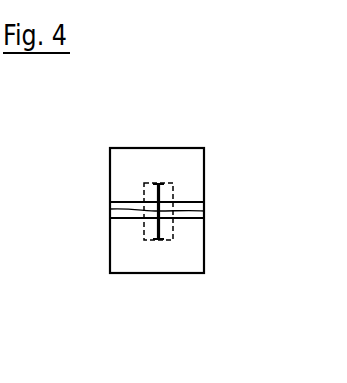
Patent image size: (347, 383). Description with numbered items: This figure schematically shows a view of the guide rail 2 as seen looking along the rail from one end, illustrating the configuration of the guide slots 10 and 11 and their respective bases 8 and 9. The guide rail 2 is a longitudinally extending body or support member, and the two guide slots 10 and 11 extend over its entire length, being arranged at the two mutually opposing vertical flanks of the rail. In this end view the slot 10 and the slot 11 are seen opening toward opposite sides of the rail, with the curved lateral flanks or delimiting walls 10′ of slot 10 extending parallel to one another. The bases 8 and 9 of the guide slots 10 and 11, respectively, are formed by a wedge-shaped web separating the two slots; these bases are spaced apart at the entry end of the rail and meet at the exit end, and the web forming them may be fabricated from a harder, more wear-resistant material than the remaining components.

The guide rail 2 is at (205, 164).
The base of guide slot 8 is at (146, 212).
The base of guide slot 9 is at (170, 213).
The guide slot 10 is at (204, 211).
The guide slot flank 10′ is at (204, 203).
The guide slot 11 is at (110, 209).